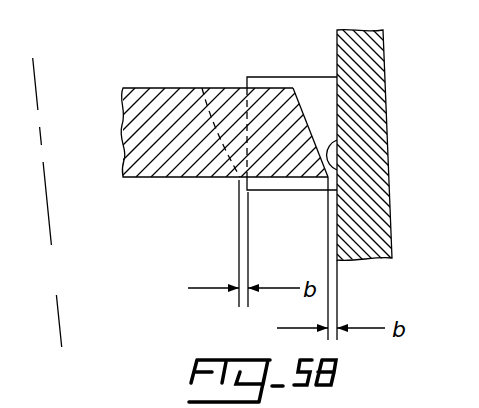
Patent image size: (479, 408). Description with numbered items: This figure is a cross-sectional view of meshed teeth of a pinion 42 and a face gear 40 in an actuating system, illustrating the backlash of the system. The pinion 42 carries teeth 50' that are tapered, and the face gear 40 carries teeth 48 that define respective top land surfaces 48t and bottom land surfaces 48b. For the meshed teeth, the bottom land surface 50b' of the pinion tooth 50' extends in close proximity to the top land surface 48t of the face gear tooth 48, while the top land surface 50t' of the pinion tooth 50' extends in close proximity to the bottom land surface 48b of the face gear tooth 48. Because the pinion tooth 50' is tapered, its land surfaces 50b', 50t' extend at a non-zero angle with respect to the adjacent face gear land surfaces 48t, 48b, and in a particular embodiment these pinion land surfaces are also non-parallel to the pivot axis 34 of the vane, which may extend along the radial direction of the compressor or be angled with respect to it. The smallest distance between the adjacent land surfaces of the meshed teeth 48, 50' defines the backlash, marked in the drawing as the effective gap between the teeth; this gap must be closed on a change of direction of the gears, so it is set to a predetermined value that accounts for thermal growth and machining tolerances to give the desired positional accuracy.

The pivot axis 34 is at (53, 267).
The face gear 40 is at (370, 48).
The pinion 42 is at (153, 107).
The teeth of the face gear 48 is at (317, 92).
The top land surfaces of the face gear teeth 48t is at (247, 80).
The bottom land surfaces of the face gear teeth 48b is at (327, 163).
The teeth of the pinion 50' is at (284, 97).
The top land surface of the pinion tooth 50t' is at (382, 135).
The bottom land surface of the pinion tooth 50b' is at (205, 161).